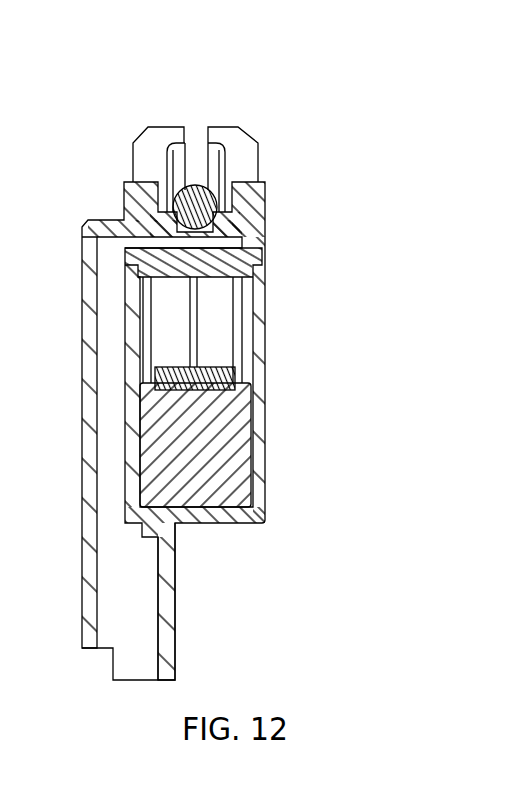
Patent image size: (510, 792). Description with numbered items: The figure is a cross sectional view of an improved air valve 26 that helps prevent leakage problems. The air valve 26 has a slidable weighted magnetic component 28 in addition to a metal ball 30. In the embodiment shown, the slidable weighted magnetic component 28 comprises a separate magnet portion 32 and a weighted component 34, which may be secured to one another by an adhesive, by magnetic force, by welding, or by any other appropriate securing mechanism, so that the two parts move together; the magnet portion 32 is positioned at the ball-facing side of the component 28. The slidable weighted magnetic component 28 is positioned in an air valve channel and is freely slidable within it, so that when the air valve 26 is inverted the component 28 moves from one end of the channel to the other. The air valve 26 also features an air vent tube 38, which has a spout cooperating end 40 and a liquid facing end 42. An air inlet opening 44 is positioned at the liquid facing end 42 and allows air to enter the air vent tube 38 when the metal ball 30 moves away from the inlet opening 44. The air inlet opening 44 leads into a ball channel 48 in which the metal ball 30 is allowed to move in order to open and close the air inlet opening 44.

The air valve 26 is at (178, 80).
The slidable weighted magnetic component 28 is at (263, 437).
The metal ball 30 is at (200, 205).
The magnet portion 32 is at (210, 378).
The weighted component 34 is at (343, 367).
The air vent tube 38 is at (123, 585).
The spout cooperating end 40 is at (185, 677).
The liquid facing end 42 is at (270, 137).
The air inlet opening 44 is at (200, 133).
The ball channel 48 is at (195, 163).